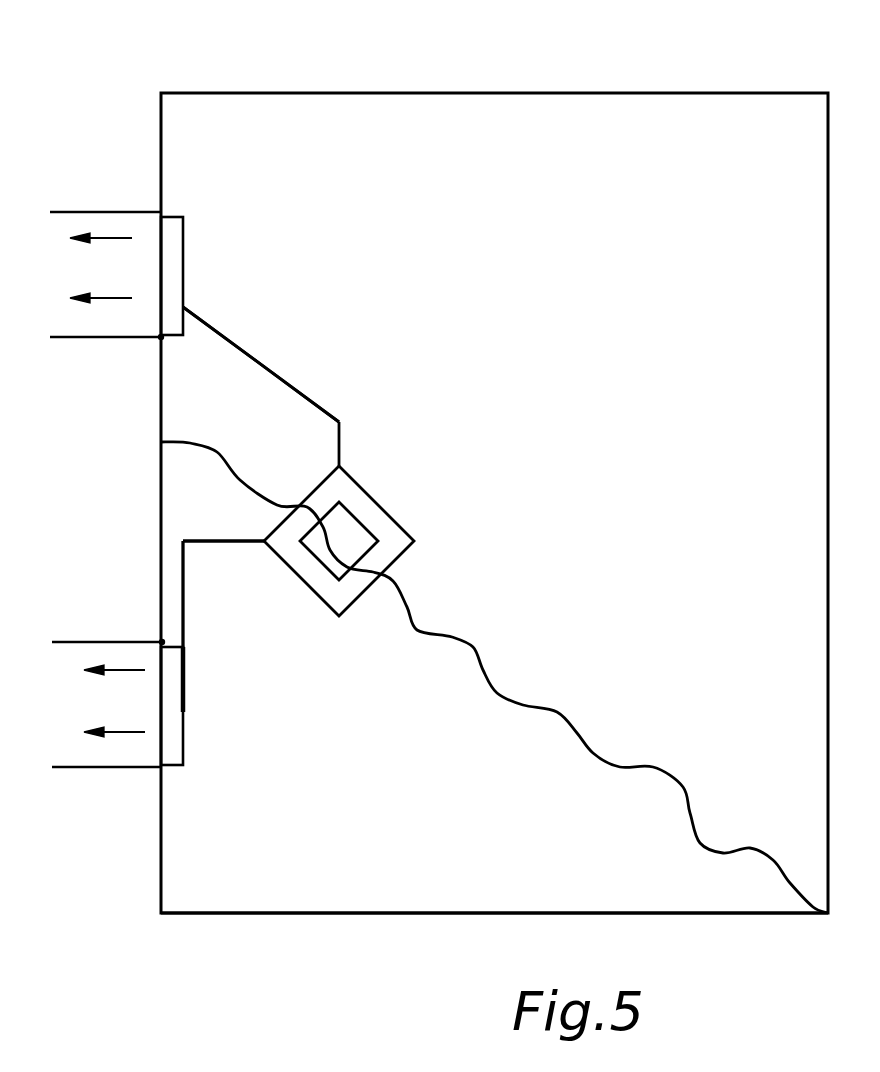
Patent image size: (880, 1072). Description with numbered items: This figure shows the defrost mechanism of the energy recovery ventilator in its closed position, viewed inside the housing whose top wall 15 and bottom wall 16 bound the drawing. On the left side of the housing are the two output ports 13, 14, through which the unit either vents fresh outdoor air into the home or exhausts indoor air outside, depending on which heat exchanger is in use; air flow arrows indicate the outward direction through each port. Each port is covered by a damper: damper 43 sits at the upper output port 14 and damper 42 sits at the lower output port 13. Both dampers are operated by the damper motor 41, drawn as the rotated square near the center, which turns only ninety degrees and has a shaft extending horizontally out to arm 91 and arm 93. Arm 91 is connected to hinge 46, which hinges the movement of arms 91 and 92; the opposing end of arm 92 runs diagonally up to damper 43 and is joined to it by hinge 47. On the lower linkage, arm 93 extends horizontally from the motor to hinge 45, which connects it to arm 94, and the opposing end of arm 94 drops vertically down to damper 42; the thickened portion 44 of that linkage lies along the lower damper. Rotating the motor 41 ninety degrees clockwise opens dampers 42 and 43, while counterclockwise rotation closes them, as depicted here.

The output port 13 is at (115, 772).
The output port 14 is at (115, 340).
The top wall 15 is at (626, 92).
The bottom wall 16 is at (348, 913).
The damper motor 41 is at (403, 527).
The damper 42 is at (183, 748).
The damper 43 is at (183, 247).
The lower partition wall 44 is at (185, 708).
The hinge 45 is at (183, 540).
The hinge 46 is at (341, 422).
The hinge 47 is at (183, 307).
The arm 91 is at (341, 448).
The arm 92 is at (290, 383).
The arm 93 is at (230, 541).
The arm 94 is at (186, 605).